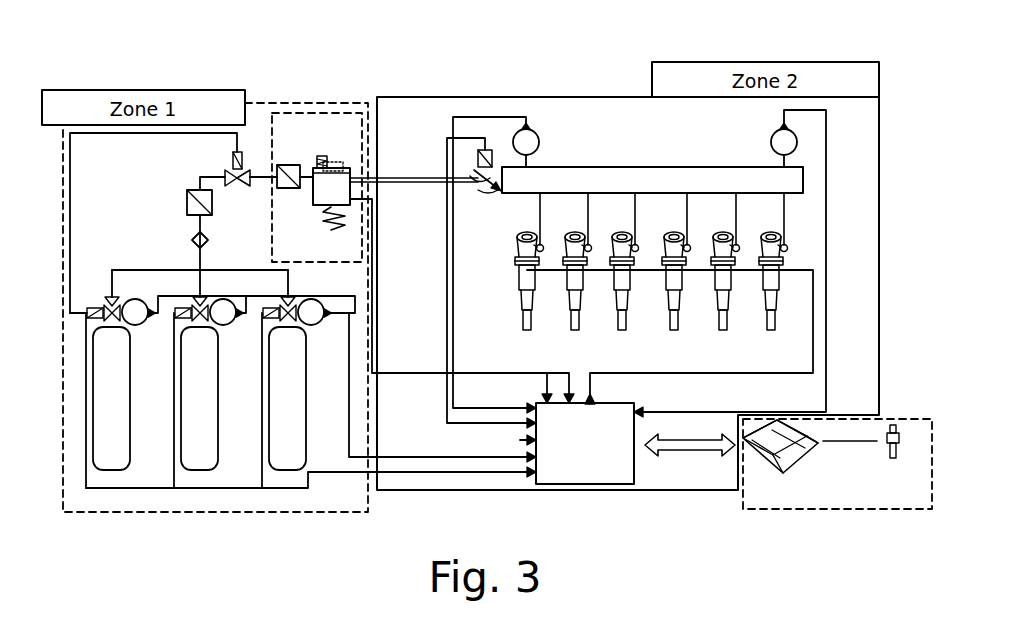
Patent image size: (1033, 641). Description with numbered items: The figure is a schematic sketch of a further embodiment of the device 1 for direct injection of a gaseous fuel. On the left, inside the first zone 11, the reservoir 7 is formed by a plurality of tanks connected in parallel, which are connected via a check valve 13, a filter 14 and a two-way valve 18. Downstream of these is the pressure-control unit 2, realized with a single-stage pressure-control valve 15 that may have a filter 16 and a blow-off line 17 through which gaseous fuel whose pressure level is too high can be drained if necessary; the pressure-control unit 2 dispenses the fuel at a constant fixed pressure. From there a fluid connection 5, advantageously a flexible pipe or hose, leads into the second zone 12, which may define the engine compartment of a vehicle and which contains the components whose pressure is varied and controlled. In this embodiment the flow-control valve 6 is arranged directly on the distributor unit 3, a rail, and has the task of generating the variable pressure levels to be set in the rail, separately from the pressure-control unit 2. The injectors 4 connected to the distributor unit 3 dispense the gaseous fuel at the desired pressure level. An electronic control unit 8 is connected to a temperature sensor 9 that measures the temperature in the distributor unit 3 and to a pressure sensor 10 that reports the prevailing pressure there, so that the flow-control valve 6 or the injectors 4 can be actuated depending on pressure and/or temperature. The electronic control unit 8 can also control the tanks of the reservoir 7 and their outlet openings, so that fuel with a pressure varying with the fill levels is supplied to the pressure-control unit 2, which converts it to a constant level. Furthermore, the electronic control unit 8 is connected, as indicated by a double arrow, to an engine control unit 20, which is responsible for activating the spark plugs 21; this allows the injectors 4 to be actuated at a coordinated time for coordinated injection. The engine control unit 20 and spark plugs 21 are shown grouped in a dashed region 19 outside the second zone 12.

The device 1 is at (500, 82).
The pressure-control unit 2 is at (275, 140).
The distributor unit 3 is at (597, 167).
The injectors 4 is at (583, 300).
The fluid connection 5 is at (415, 178).
The flow-control valve 6 is at (478, 176).
The reservoir 7 is at (212, 458).
The electronic control unit 8 is at (576, 457).
The temperature sensor 9 is at (528, 128).
The pressure sensor 10 is at (770, 138).
The first zone 11 is at (330, 512).
The second zone 12 is at (677, 491).
The check valve 13 is at (192, 240).
The filter 14 is at (187, 195).
The pressure-control valve 15 is at (343, 167).
The filter 16 is at (290, 189).
The blow-off line 17 is at (321, 156).
The two-way valve 18 is at (237, 186).
The external unit 19 is at (877, 510).
The engine control unit 20 is at (812, 458).
The spark plugs 21 is at (898, 458).